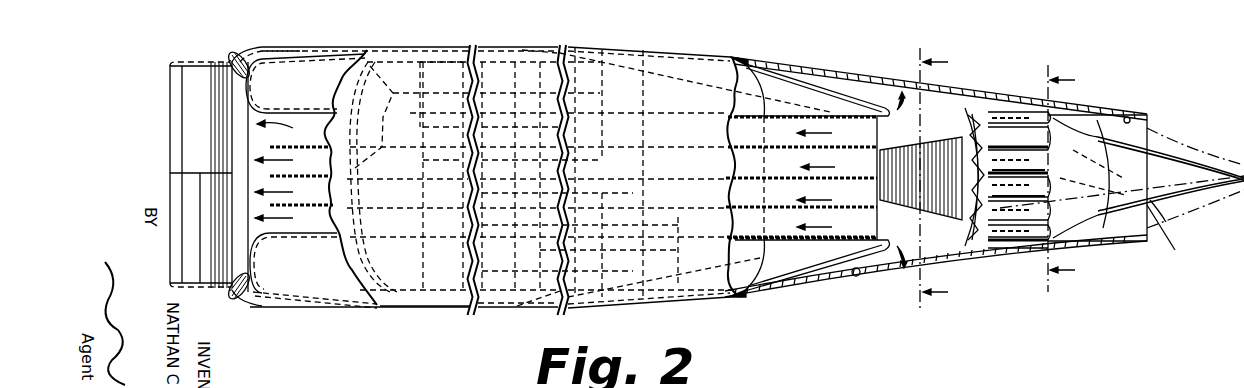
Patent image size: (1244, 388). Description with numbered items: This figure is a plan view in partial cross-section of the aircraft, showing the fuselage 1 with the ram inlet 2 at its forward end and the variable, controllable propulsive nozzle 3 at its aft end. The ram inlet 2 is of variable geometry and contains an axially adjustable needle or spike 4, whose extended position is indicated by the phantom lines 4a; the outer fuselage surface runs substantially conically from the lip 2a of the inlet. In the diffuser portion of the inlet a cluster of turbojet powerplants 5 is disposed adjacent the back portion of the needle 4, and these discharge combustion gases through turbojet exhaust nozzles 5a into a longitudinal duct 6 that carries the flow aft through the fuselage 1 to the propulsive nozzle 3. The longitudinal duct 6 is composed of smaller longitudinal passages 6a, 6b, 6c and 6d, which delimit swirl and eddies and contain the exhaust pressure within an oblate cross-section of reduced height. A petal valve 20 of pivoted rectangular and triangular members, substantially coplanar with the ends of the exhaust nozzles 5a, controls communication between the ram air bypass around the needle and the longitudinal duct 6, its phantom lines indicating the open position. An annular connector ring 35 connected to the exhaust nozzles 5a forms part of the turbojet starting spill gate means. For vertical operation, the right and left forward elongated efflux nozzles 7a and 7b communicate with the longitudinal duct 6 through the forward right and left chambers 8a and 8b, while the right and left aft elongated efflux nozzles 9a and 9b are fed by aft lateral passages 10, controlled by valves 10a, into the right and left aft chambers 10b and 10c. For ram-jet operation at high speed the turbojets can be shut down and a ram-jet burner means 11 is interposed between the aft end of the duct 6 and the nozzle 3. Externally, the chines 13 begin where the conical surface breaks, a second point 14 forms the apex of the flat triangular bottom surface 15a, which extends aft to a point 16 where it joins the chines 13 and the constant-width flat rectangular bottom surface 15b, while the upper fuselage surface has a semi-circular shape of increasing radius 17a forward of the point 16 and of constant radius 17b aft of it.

The fuselage 1 is at (402, 48).
The ram inlet 2 is at (1128, 117).
The lip of inlet 2a is at (1148, 241).
The propulsive nozzle 3 is at (175, 148).
The needle or spike 4 is at (1180, 118).
The phantom lines 4a is at (1185, 208).
The turbojet powerplants 5 is at (1010, 122).
The turbojet exhaust nozzles 5a is at (975, 248).
The longitudinal duct 6 is at (297, 117).
The longitudinal passage 6a is at (802, 135).
The longitudinal passage 6b is at (801, 167).
The longitudinal passage 6c is at (801, 196).
The longitudinal passage 6d is at (802, 226).
The right forward elongated efflux nozzle 7a is at (868, 284).
The left forward elongated efflux nozzle 7b is at (810, 70).
The forward right chamber 8a is at (857, 282).
The forward left chamber 8b is at (858, 85).
The right aft elongated efflux nozzle 9a is at (313, 306).
The left aft elongated efflux nozzle 9b is at (344, 48).
The aft lateral passages 10 is at (236, 55).
The valves 10a is at (250, 48).
The right aft chamber 10b is at (284, 306).
The left aft chamber 10c is at (286, 50).
The ram-jet burner means 11 is at (187, 110).
The chines 13 is at (732, 57).
The second point 14 is at (1157, 210).
The flat triangular surface 15a is at (668, 72).
The bottom flat rectangular surface 15b is at (440, 47).
The point 16 is at (550, 32).
The semi-circular shape of increasing radius 17a is at (675, 303).
The semi-circular shape of constant radius 17b is at (398, 306).
The petal valve 20 is at (940, 150).
The annular connector ring 35 is at (952, 248).